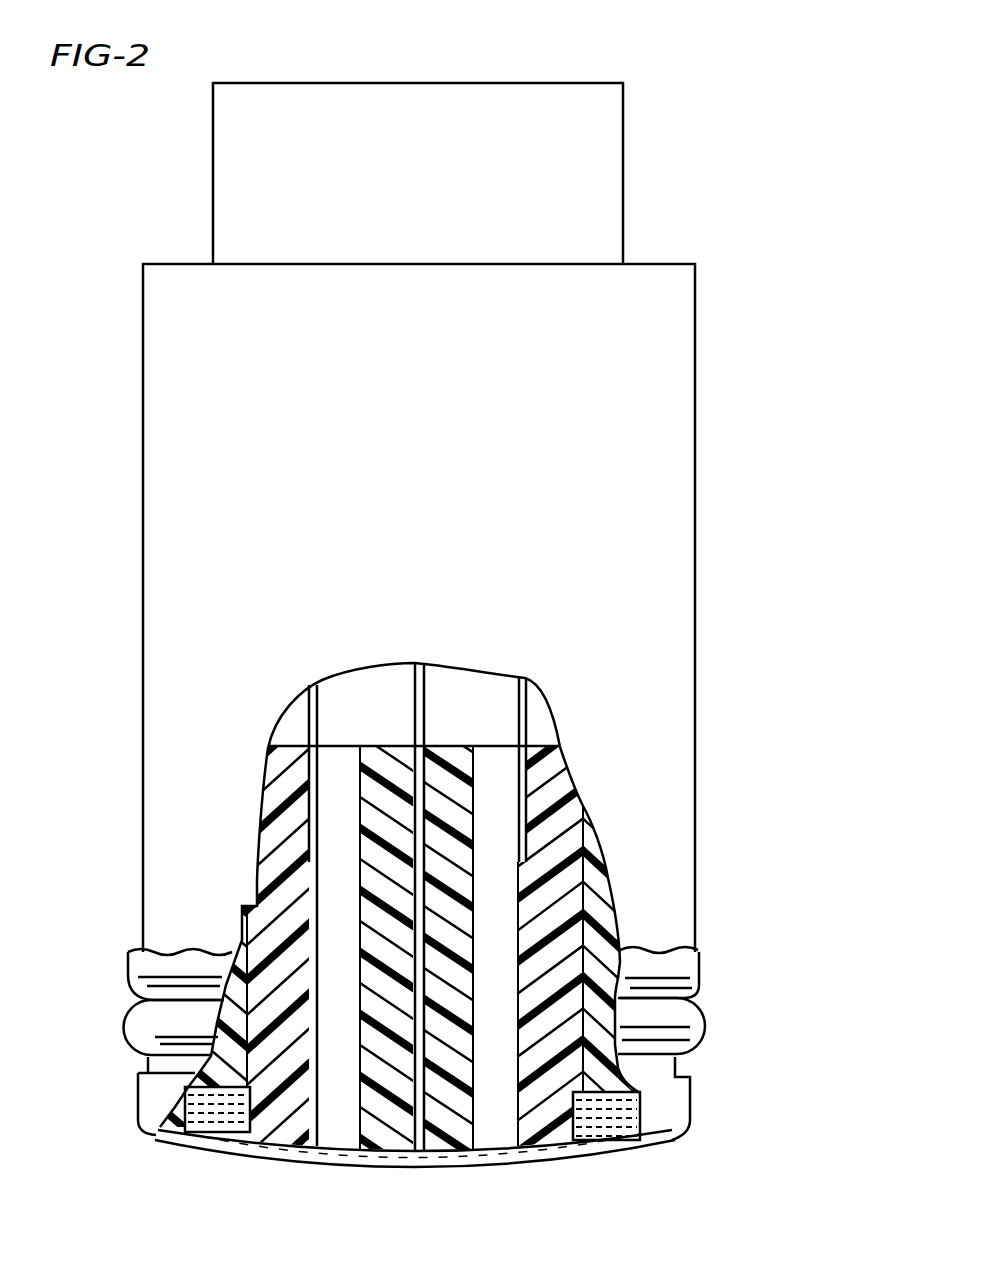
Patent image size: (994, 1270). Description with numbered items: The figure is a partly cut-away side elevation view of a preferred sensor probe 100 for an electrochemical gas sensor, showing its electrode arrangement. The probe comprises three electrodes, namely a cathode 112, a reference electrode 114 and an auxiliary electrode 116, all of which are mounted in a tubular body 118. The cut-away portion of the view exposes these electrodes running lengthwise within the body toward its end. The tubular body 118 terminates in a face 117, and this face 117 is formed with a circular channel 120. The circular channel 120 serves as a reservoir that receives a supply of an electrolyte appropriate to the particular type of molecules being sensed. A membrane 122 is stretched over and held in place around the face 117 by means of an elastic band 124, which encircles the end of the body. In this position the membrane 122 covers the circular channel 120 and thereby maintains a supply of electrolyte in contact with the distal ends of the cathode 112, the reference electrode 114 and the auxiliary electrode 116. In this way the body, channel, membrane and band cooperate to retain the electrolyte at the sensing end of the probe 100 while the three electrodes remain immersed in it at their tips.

The sensor probe 100 is at (640, 203).
The cathode 112 is at (425, 818).
The reference electrode 114 is at (313, 763).
The auxiliary electrode 116 is at (562, 747).
The face 117 is at (568, 1148).
The tubular body 118 is at (697, 718).
The circular channel 120 is at (192, 1114).
The membrane 122 is at (700, 988).
The elastic band 124 is at (703, 1028).